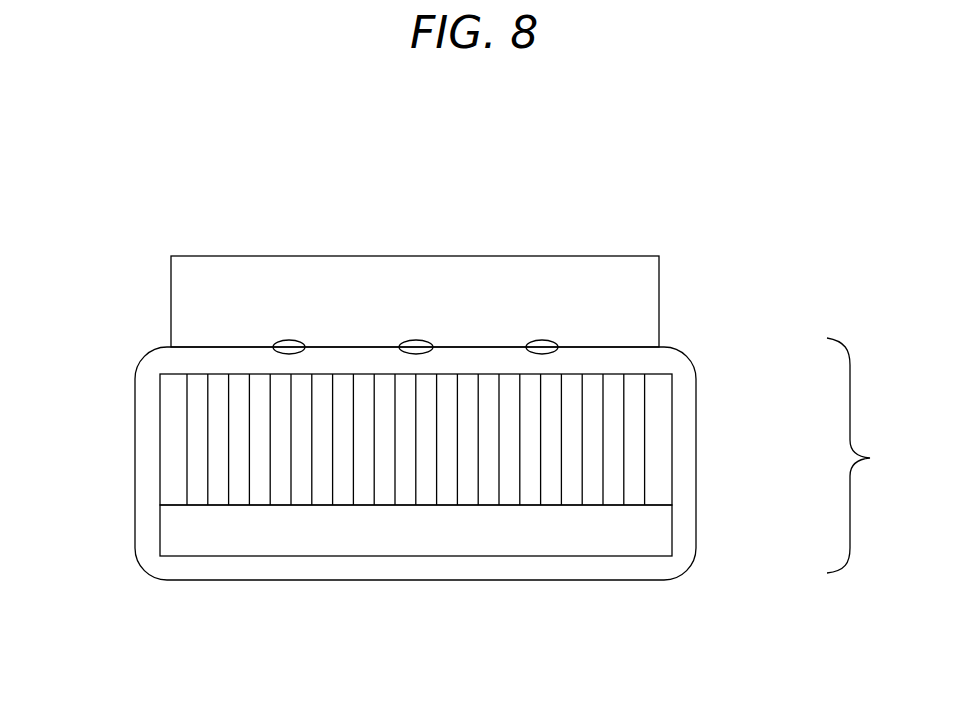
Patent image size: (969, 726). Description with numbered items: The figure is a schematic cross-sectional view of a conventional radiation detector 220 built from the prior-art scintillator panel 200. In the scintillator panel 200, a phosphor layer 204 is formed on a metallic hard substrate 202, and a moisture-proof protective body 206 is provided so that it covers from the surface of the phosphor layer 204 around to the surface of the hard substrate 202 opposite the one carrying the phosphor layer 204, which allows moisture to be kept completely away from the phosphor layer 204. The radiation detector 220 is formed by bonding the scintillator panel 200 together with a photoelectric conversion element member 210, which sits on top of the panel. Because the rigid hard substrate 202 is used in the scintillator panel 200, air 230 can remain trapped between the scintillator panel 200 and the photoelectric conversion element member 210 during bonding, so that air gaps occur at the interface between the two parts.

The scintillator panel 200 is at (917, 468).
The hard substrate 202 is at (653, 529).
The phosphor layer 204 is at (632, 441).
The moisture-proof protective body 206 is at (690, 385).
The photoelectric conversion element member 210 is at (207, 287).
The radiation detector 220 is at (155, 161).
The air 230 is at (290, 340).